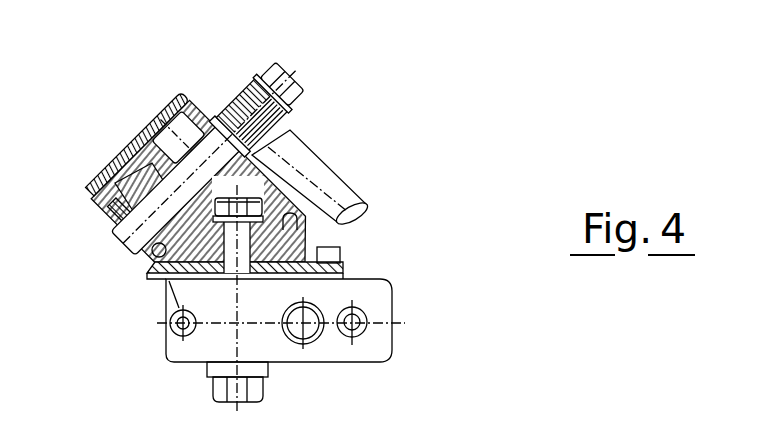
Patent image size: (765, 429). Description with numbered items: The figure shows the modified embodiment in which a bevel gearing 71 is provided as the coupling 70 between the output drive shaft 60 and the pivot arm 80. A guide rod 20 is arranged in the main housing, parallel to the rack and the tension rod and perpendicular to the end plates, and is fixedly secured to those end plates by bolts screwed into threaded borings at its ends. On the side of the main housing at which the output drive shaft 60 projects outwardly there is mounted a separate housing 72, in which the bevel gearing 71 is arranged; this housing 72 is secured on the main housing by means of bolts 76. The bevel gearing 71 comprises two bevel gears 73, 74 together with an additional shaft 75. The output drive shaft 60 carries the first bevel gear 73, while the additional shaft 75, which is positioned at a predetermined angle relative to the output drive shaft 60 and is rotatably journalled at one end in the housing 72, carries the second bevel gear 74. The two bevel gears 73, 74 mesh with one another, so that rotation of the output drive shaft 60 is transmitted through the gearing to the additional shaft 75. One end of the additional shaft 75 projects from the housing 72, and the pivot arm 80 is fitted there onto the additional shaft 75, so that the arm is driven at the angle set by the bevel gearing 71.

The guide rod 20 is at (365, 315).
The output drive shaft 60 is at (232, 256).
The coupling 70 is at (105, 100).
The bevel gearing 71 is at (150, 277).
The housing 72 is at (88, 174).
The first bevel gear 73 is at (272, 268).
The second bevel gear 74 is at (100, 200).
The additional shaft 75 is at (213, 137).
The bolts 76 is at (340, 250).
The pivot arm 80 is at (323, 170).